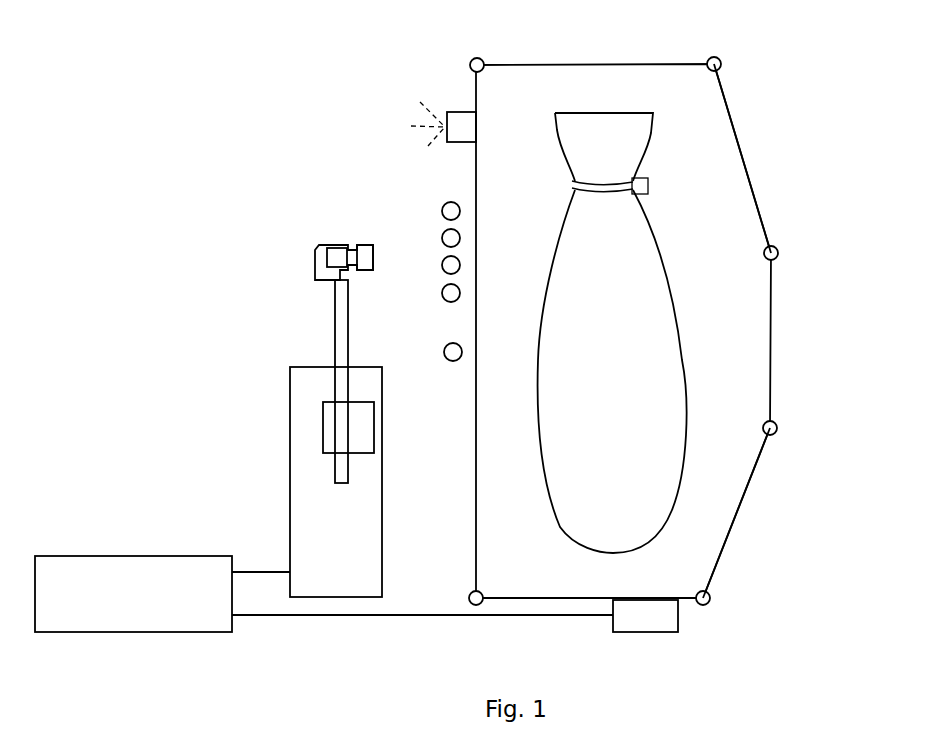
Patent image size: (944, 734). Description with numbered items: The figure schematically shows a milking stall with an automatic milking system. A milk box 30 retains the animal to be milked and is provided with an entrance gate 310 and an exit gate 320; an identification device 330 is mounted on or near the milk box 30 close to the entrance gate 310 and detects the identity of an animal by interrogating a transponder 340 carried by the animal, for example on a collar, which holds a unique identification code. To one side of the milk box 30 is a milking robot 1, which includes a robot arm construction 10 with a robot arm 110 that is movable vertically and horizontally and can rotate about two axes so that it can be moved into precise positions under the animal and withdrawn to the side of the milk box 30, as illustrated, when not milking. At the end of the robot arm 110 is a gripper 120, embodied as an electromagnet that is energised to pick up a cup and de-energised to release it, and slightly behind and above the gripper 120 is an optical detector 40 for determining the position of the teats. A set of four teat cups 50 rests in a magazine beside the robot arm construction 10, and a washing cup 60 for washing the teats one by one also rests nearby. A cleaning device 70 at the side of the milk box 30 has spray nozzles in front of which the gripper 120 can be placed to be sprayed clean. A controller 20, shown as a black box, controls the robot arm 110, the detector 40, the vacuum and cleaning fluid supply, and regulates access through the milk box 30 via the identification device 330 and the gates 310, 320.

The milking robot 1 is at (278, 106).
The robot arm construction 10 is at (290, 413).
The controller 20 is at (118, 556).
The milk box 30 is at (566, 62).
The optical detector 40 is at (327, 258).
The teat cups 50 is at (442, 263).
The washing cup 60 is at (444, 352).
The cleaning device 70 is at (448, 112).
The robot arm 110 is at (335, 318).
The gripper 120 is at (365, 245).
The entrance gate 310 is at (735, 528).
The exit gate 320 is at (750, 157).
The identification device 330 is at (655, 632).
The transponder 340 is at (649, 184).